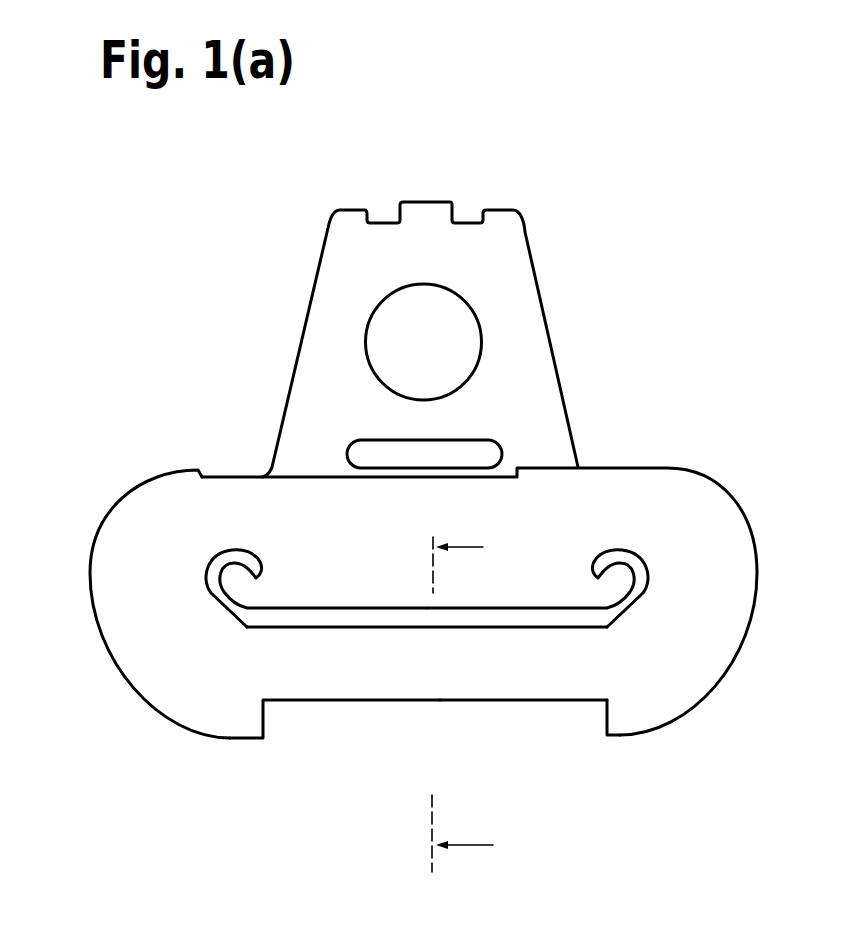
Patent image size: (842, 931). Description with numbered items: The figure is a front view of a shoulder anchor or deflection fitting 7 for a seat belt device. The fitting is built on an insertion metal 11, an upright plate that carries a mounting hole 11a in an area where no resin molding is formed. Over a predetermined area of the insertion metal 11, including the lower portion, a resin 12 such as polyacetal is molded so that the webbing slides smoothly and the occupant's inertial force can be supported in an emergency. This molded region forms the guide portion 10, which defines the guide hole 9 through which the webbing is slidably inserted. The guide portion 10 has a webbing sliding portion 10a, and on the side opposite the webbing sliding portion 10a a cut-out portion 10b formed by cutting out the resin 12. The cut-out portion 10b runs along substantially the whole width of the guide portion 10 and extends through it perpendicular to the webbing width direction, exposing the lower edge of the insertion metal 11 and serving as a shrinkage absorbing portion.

The shoulder anchor 7 is at (255, 298).
The guide hole 9 is at (318, 622).
The guide portion 10 is at (368, 675).
The webbing sliding portion 10a is at (482, 627).
The cut-out portion 10b is at (577, 703).
The insertion metal 11 is at (543, 407).
The mounting hole 11a is at (460, 354).
The resin 12 is at (715, 537).